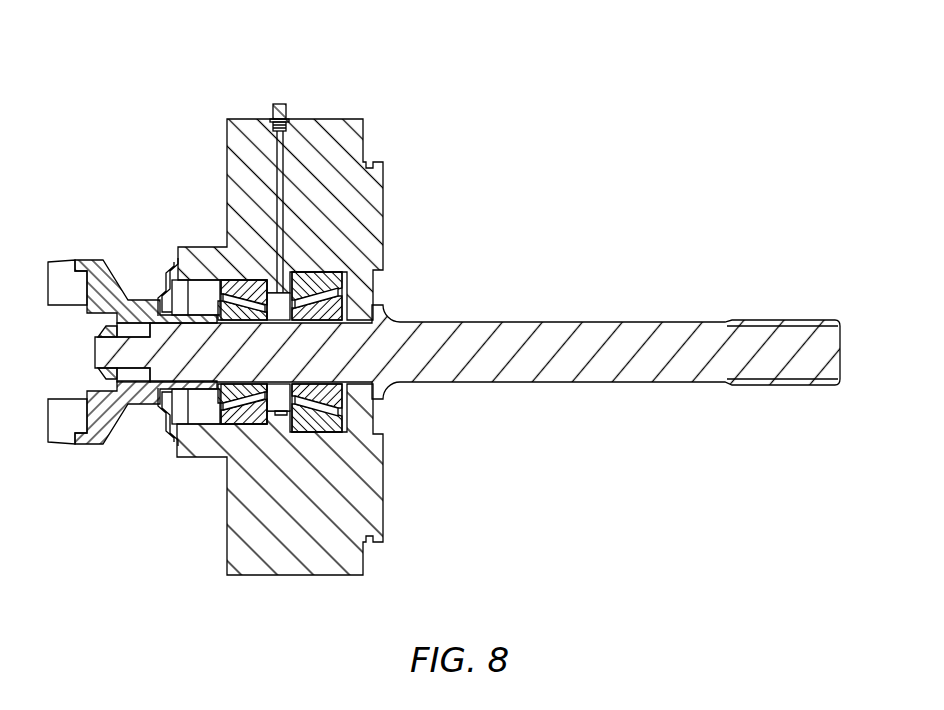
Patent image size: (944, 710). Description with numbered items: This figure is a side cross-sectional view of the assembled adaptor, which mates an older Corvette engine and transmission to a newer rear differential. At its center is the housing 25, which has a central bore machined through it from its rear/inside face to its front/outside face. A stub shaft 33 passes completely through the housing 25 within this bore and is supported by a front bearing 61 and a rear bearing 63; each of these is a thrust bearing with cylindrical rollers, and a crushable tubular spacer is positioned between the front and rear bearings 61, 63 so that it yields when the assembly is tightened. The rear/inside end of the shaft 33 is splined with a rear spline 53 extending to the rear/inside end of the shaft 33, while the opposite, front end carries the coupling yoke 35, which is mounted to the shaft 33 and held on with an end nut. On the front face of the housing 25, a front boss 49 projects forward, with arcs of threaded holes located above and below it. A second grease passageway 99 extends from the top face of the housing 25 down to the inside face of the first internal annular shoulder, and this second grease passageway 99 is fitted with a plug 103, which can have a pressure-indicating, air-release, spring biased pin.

The housing 25 is at (250, 118).
The stub shaft 33 is at (680, 372).
The coupling yoke 35 is at (108, 270).
The front boss 49 is at (200, 457).
The rear spline 53 is at (797, 323).
The front bearing 61 is at (253, 400).
The rear bearing 63 is at (328, 417).
The second grease passageway 99 is at (277, 182).
The plug 103 is at (275, 102).